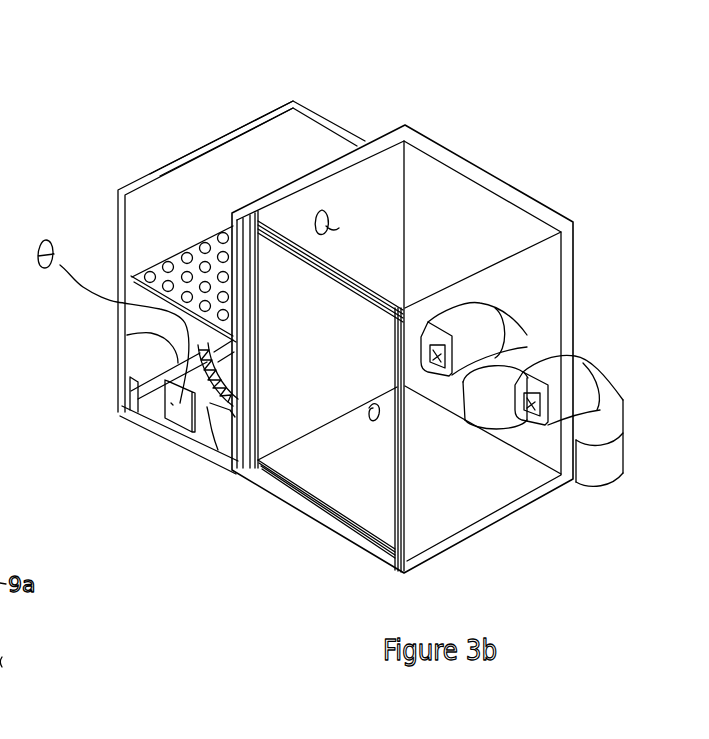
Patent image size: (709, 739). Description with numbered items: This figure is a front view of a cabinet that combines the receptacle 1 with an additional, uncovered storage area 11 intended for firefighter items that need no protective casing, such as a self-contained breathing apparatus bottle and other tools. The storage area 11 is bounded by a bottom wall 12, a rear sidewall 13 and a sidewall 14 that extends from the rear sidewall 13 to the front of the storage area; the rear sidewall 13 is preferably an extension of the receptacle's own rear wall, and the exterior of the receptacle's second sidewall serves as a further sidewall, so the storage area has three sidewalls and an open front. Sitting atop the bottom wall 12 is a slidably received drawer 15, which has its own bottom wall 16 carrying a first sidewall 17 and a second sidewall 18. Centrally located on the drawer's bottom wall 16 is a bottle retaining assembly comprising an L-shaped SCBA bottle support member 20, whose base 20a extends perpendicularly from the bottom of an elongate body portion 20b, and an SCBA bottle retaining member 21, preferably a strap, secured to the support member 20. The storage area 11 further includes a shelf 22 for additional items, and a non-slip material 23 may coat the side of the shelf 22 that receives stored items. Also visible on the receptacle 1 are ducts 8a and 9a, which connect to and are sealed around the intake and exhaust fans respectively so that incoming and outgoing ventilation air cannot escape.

The receptacle 1 is at (462, 131).
The storage area 11 is at (150, 153).
The bottom wall 12 is at (123, 415).
The rear sidewall 13 is at (330, 120).
The sidewall 14 is at (191, 155).
The drawer 15 is at (127, 343).
The bottom wall 16 is at (200, 427).
The first sidewall 17 is at (212, 433).
The second sidewall 18 is at (130, 377).
The SCBA bottle support member 20 is at (215, 427).
The base 20a is at (163, 405).
The elongate body portion 20b is at (233, 420).
The SCBA bottle retaining member 21 is at (208, 346).
The shelf 22 is at (132, 277).
The non-slip material 23 is at (215, 205).
The duct 8a is at (528, 332).
The duct 9a is at (614, 396).